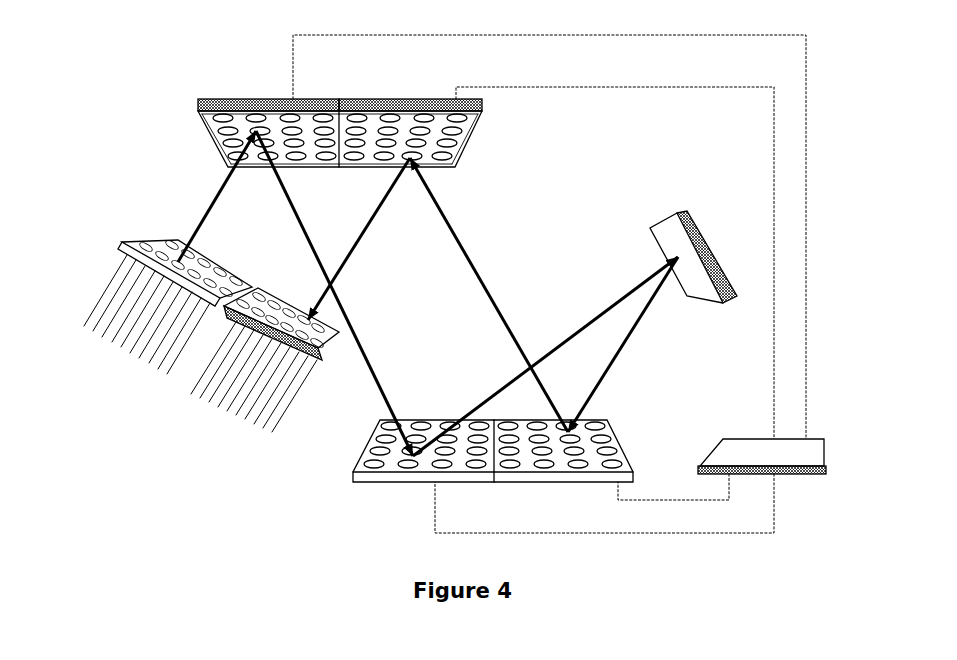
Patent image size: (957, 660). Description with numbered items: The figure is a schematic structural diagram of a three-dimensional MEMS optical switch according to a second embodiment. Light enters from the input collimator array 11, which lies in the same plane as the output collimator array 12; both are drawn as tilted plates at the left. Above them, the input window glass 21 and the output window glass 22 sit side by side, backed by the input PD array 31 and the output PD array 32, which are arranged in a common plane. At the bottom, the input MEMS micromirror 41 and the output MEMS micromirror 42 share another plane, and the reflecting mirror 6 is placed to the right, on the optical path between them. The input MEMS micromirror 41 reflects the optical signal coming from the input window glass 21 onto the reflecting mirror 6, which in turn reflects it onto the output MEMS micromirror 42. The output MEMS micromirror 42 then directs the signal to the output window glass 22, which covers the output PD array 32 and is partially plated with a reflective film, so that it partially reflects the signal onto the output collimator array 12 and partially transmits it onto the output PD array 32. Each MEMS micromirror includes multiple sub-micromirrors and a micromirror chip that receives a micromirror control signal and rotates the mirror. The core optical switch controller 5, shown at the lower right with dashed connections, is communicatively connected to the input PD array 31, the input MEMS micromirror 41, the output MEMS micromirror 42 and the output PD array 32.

The input collimator array 11 is at (137, 242).
The output collimator array 12 is at (325, 362).
The input window glass 21 is at (228, 167).
The output window glass 22 is at (457, 167).
The input PD array 31 is at (250, 102).
The output PD array 32 is at (410, 101).
The input MEMS micromirror 41 is at (395, 481).
The output MEMS micromirror 42 is at (525, 481).
The core optical switch controller 5 is at (825, 462).
The reflecting mirror 6 is at (670, 235).